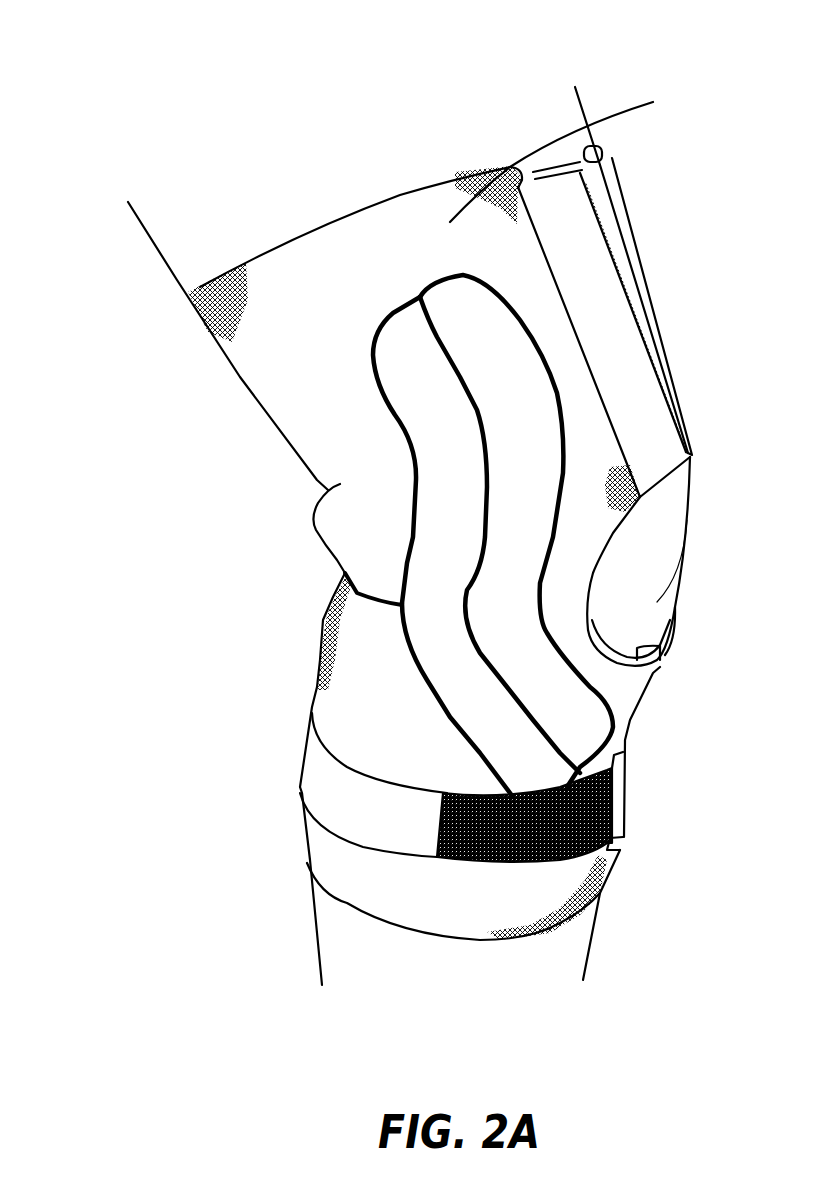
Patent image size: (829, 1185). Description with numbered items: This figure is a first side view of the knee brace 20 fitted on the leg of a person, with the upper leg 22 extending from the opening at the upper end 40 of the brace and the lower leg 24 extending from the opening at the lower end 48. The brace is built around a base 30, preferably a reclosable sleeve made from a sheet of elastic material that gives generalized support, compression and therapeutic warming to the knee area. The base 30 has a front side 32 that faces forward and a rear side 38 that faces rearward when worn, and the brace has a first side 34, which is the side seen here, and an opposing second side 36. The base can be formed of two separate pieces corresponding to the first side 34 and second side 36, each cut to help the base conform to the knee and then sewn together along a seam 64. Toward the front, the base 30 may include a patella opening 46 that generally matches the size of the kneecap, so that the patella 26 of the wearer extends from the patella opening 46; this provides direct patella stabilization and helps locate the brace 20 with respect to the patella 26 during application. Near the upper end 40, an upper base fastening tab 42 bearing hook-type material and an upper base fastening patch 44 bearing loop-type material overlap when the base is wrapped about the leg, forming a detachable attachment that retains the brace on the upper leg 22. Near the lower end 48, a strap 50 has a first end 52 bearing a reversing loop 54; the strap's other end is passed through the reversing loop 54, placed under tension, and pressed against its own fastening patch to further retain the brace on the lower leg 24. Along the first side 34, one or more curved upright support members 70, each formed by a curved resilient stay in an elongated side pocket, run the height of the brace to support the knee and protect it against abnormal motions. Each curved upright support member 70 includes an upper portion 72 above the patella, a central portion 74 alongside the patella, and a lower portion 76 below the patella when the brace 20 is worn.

The knee brace 20 is at (167, 541).
The upper leg 22 is at (465, 118).
The lower leg 24 is at (370, 960).
The patella 26 is at (660, 556).
The base 30 is at (337, 245).
The front side 32 is at (220, 277).
The first side 34 is at (237, 317).
The second side 36 is at (627, 238).
The rear side 38 is at (320, 533).
The upper end 40 is at (568, 154).
The upper base fastening tab 42 is at (575, 203).
The upper base fastening patch 44 is at (590, 168).
The patella opening 46 is at (640, 657).
The lower end 48 is at (547, 893).
The strap 50 is at (345, 793).
The first end 52 is at (593, 810).
The reversing loop 54 is at (610, 838).
The seam 64 is at (357, 595).
The curved upright support member 70 is at (430, 398).
The upper portion 72 is at (397, 347).
The central portion 74 is at (447, 470).
The lower portion 76 is at (490, 722).